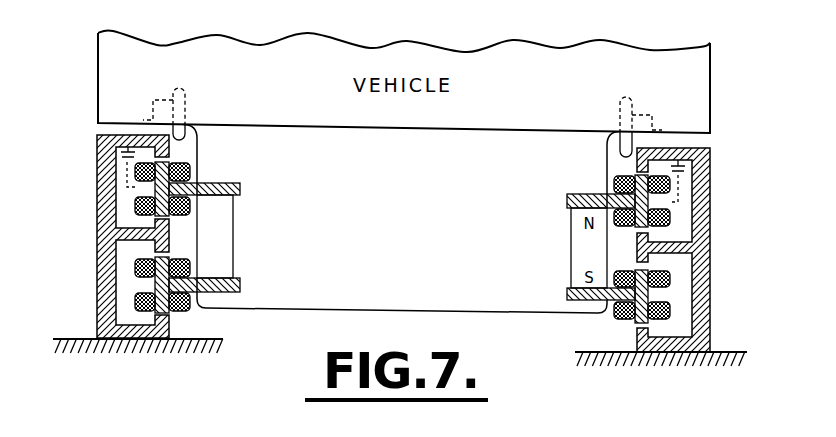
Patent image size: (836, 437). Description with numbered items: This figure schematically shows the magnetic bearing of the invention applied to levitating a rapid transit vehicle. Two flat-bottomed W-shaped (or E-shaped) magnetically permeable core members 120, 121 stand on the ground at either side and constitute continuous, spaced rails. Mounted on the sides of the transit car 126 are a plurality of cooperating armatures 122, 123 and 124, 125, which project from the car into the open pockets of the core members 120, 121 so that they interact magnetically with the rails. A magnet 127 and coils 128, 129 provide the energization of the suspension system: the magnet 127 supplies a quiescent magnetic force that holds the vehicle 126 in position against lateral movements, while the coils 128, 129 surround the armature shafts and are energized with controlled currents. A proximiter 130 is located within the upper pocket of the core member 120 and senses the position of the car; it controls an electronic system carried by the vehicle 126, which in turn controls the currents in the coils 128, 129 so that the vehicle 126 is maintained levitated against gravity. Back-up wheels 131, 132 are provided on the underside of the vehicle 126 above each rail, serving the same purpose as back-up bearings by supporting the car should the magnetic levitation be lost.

The magnetically permeable core member 120 is at (97, 238).
The magnetically permeable core member 121 is at (710, 296).
The armature 122 is at (169, 164).
The armature 123 is at (240, 188).
The armature 124 is at (170, 260).
The armature 125 is at (240, 290).
The transit car 126 is at (408, 302).
The magnet 127 is at (233, 224).
The coil 128 is at (134, 202).
The coil 129 is at (134, 299).
The proximiter 130 is at (97, 156).
The back-up wheel 131 is at (189, 108).
The back-up wheel 132 is at (618, 113).